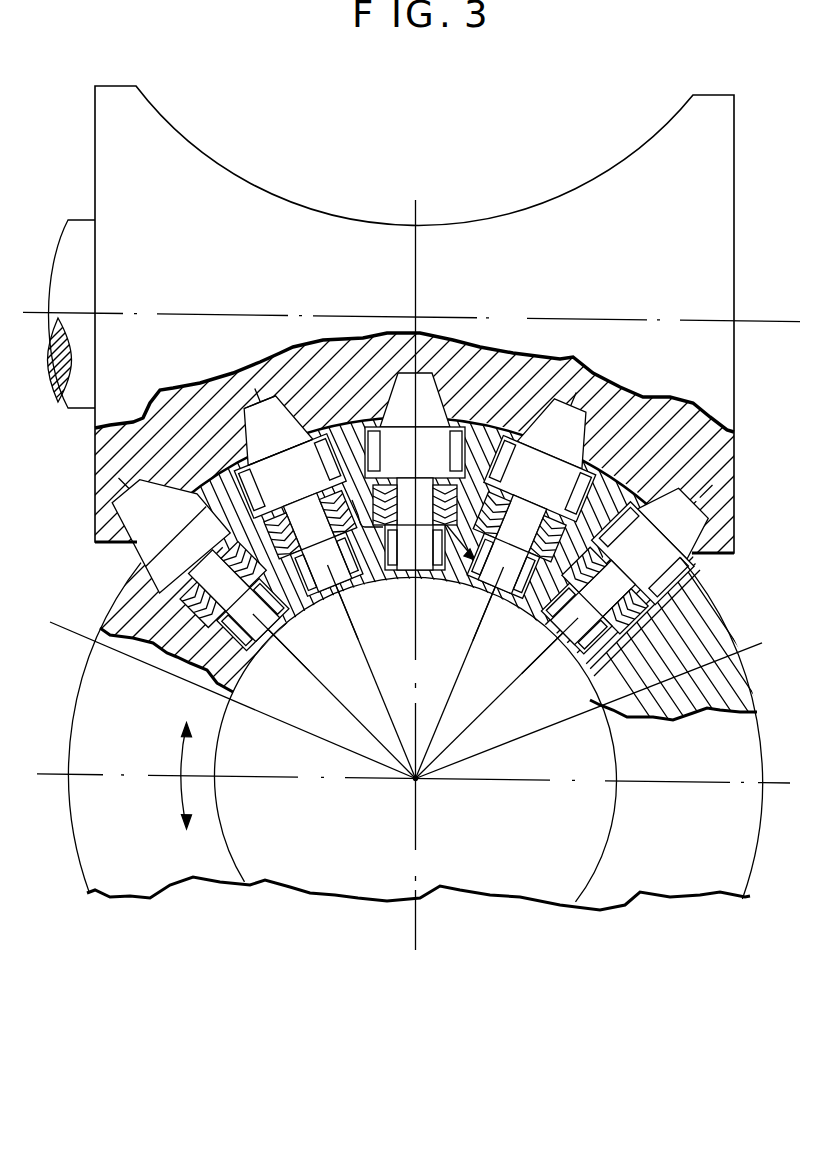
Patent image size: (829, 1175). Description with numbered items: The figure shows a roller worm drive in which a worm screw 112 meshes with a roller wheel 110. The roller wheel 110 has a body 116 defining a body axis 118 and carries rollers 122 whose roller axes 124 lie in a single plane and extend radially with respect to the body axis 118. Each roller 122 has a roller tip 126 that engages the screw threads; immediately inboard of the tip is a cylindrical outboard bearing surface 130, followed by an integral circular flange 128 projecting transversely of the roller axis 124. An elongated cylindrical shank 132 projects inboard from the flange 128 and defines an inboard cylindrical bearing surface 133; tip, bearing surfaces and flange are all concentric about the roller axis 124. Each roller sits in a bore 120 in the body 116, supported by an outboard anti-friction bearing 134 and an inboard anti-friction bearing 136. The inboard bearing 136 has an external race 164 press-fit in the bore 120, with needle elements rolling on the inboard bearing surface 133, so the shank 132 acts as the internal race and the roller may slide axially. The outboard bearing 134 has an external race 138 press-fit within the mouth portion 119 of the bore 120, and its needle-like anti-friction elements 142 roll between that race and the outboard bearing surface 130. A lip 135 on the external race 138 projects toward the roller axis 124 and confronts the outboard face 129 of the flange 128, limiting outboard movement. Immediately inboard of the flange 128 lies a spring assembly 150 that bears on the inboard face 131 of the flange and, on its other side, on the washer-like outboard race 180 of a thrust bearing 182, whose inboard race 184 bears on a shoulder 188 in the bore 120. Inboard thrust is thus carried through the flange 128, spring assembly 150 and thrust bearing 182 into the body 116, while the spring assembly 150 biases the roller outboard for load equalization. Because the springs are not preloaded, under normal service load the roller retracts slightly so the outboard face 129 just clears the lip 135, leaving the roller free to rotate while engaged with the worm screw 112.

The roller wheel 110 is at (68, 727).
The worm screw 112 is at (132, 96).
The body 116 is at (118, 604).
The body axis 118 is at (416, 777).
The mouth portion 119 is at (342, 458).
The bore 120 is at (416, 531).
The roller 122 is at (253, 632).
The roller axis 124 is at (376, 676).
The roller tip 126 is at (281, 407).
The integral circular flange 128 is at (231, 464).
The outboard face 129 is at (268, 508).
The cylindrical outboard bearing surface 130 is at (250, 409).
The inboard face 131 is at (269, 400).
The elongated cylindrical shank 132 is at (318, 558).
The inboard cylindrical bearing surface 133 is at (392, 614).
The outboard anti-friction bearing 134 is at (356, 415).
The lip 135 is at (342, 460).
The inboard anti-friction bearing 136 is at (398, 576).
The external race 138 is at (303, 418).
The needle-like anti-friction elements 142 is at (380, 370).
The spring assembly 150 is at (214, 478).
The external race 164 is at (395, 582).
The outboard race 180 is at (240, 515).
The thrust bearing 182 is at (415, 524).
The inboard race 184 is at (365, 572).
The shoulder 188 is at (320, 600).